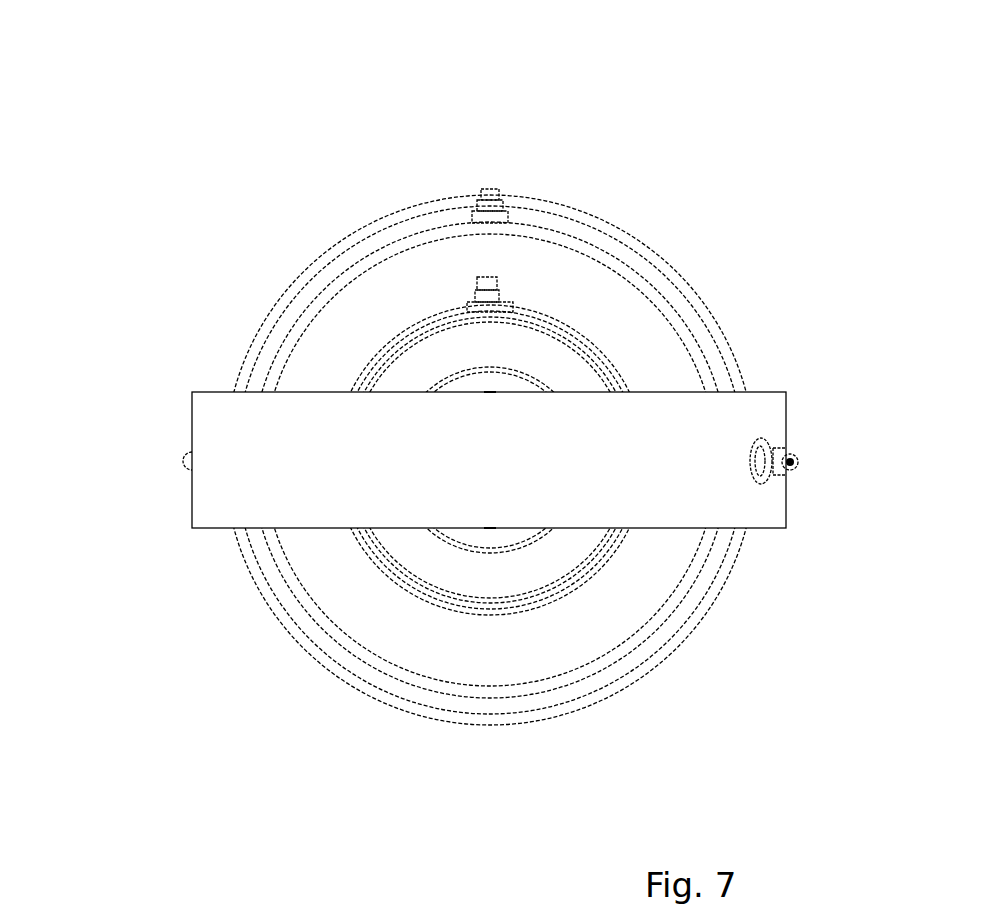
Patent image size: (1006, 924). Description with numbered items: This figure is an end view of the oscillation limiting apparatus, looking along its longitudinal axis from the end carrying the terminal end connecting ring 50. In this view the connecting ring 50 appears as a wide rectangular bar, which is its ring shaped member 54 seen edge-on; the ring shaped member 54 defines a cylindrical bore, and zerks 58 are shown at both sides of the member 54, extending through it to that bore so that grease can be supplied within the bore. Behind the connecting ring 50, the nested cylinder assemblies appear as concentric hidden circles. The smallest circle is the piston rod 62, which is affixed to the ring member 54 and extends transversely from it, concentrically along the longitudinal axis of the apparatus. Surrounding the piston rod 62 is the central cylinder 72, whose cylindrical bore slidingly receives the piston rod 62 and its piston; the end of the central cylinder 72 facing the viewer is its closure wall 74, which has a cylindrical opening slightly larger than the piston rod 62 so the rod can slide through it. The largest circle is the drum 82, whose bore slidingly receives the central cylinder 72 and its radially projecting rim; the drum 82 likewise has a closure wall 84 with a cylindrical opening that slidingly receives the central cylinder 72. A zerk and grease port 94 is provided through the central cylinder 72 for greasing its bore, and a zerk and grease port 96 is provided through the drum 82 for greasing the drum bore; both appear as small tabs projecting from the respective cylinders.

The terminal end connecting ring 50 is at (224, 534).
The ring shaped member 54 is at (685, 497).
The zerks 58 is at (790, 462).
The piston rod 62 is at (481, 540).
The central cylinder 72 is at (615, 356).
The closure wall 74 is at (445, 345).
The drum 82 is at (624, 258).
The closure wall 84 is at (325, 343).
The zerk and grease port 94 is at (492, 198).
The zerk and grease port 96 is at (490, 291).